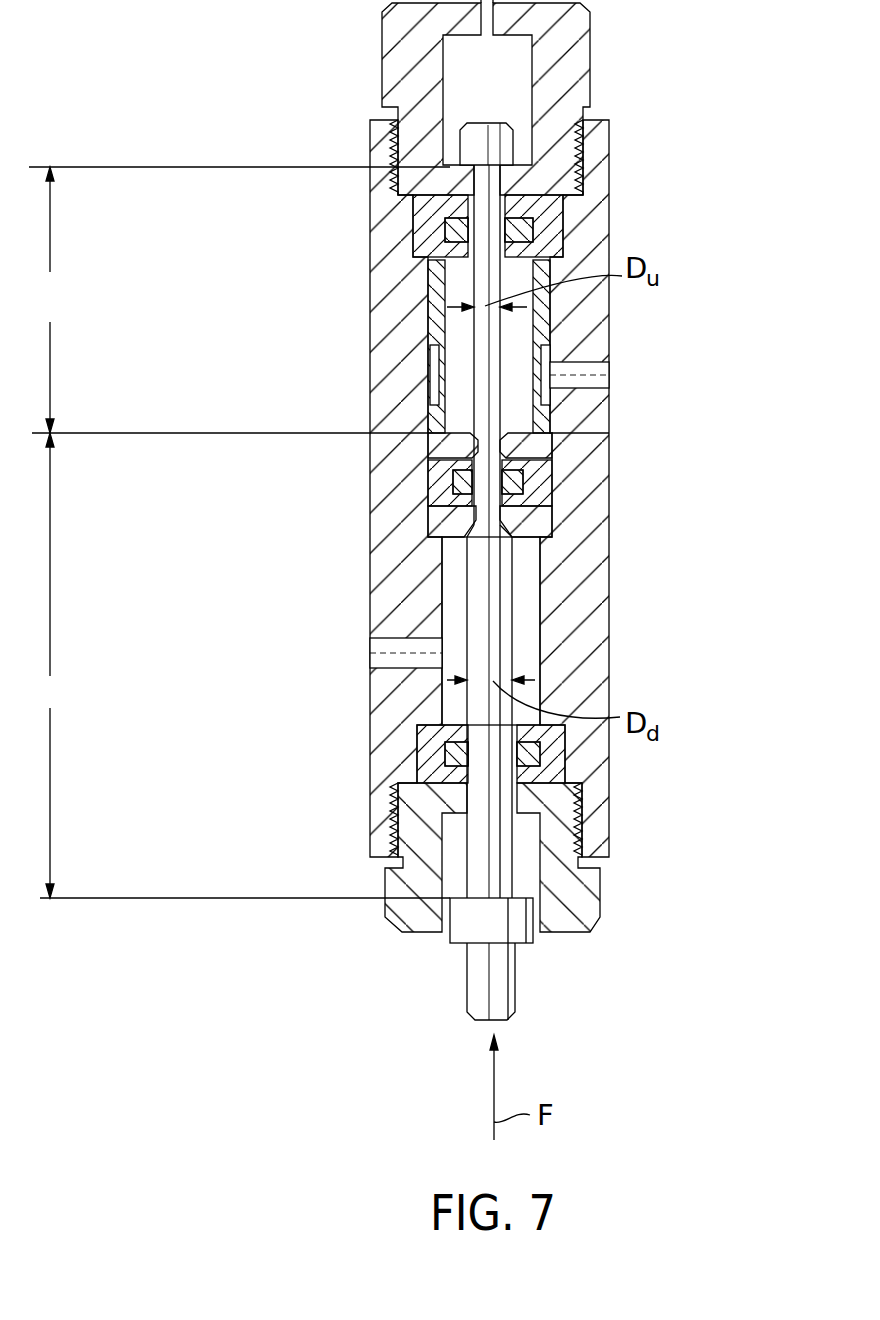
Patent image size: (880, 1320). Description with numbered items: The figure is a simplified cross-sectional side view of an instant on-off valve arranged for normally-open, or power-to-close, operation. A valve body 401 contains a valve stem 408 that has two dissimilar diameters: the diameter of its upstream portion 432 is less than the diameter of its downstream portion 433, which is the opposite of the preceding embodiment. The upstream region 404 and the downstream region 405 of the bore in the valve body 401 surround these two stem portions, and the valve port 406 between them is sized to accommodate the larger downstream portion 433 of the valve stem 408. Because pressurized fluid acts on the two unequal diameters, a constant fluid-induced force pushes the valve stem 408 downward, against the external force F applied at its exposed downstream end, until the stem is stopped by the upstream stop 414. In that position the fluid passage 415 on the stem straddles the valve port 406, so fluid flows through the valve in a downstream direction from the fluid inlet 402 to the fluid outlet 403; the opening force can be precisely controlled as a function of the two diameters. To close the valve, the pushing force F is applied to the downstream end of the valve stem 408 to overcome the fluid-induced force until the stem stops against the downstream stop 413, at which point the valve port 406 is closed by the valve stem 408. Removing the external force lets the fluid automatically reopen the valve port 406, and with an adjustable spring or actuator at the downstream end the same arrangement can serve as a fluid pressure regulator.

The valve body 401 is at (595, 185).
The fluid inlet 402 is at (622, 375).
The fluid outlet 403 is at (360, 657).
The upper sleeve / chamber 404 is at (460, 330).
The lower chamber 405 is at (530, 633).
The valve port 406 is at (505, 468).
The valve stem 408 is at (500, 1000).
The downstream stop 413 is at (473, 930).
The upstream stop 414 is at (510, 132).
The fluid passage 415 is at (468, 510).
The upstream portion 432 is at (239, 300).
The downstream portion 433 is at (239, 665).